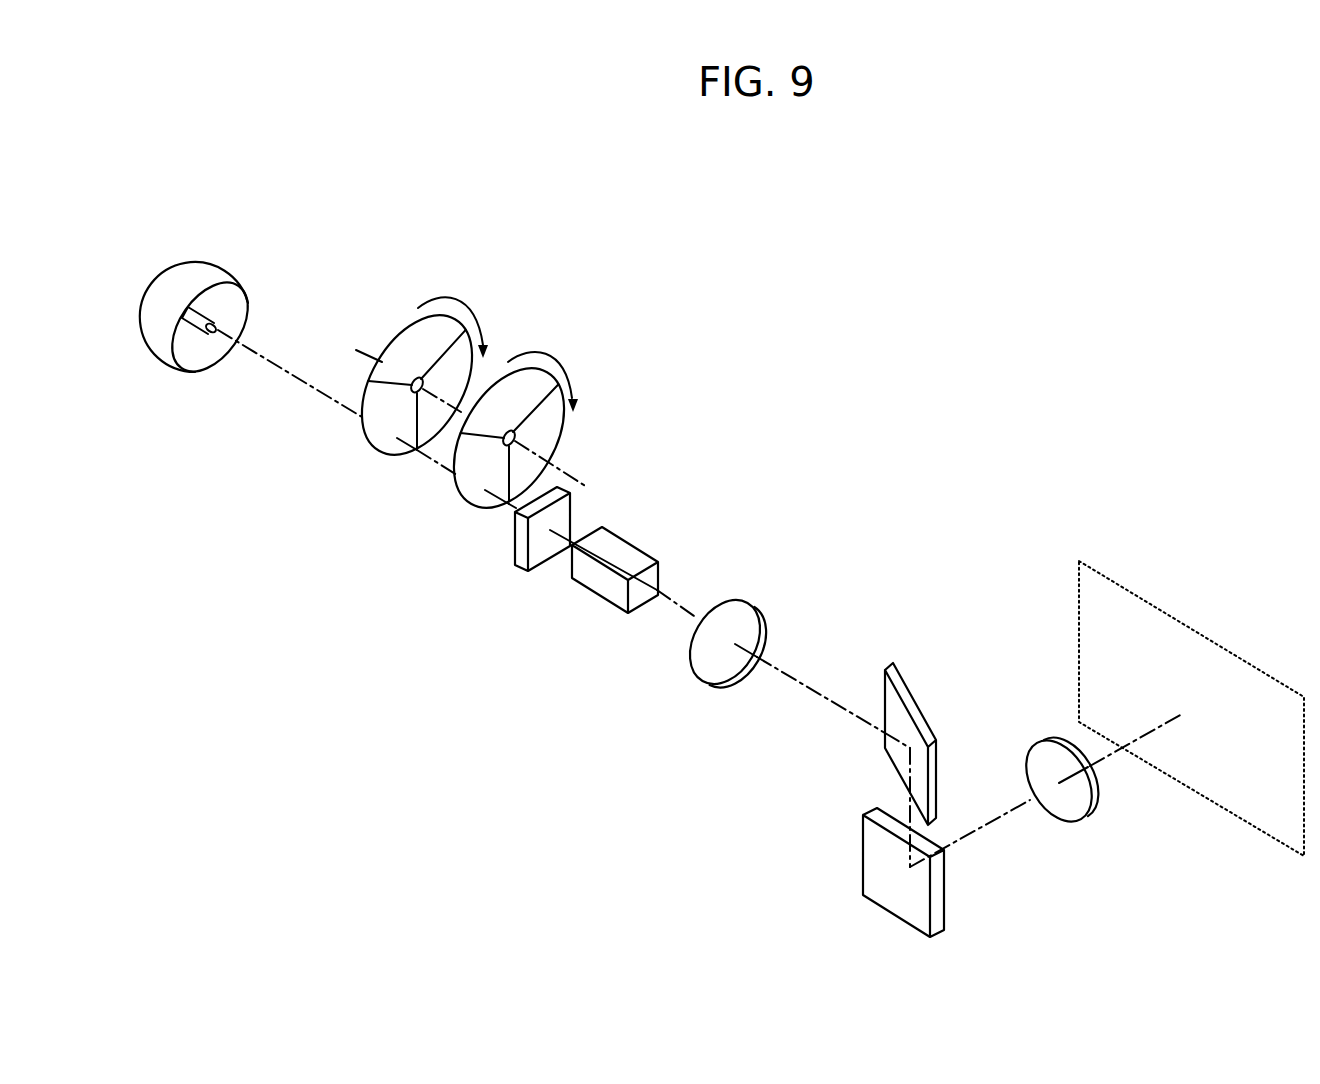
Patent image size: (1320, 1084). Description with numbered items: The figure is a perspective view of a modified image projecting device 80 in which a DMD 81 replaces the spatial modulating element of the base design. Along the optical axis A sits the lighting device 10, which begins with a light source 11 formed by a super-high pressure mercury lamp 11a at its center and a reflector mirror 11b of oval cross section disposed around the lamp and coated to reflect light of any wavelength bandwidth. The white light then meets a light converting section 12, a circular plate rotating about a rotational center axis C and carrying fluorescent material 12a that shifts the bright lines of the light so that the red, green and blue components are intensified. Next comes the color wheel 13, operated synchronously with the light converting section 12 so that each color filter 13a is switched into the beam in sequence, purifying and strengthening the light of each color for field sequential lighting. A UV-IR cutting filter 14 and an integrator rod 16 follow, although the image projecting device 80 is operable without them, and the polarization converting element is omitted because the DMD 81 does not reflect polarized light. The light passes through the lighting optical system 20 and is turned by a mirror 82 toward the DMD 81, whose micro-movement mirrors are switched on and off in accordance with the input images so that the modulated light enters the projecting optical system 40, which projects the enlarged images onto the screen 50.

The lighting device 10 is at (599, 231).
The light source 11 is at (249, 245).
The super-high pressure mercury lamp 11a is at (227, 347).
The reflector mirror 11b is at (143, 331).
The light converting section 12 is at (360, 429).
The fluorescent material 12a is at (402, 344).
The color wheel 13 is at (557, 458).
The color filter 13a is at (508, 365).
The UV-IR cutting filter 14 is at (518, 568).
The integrator rod 16 is at (597, 592).
The lighting optical system 20 is at (763, 592).
The projecting optical system 40 is at (1094, 831).
The screen 50 is at (1240, 656).
The image projecting device 80 is at (1037, 433).
The DMD 81 is at (945, 890).
The mirror 82 is at (922, 712).
The optical axis A is at (287, 372).
The rotational center axis C is at (587, 487).